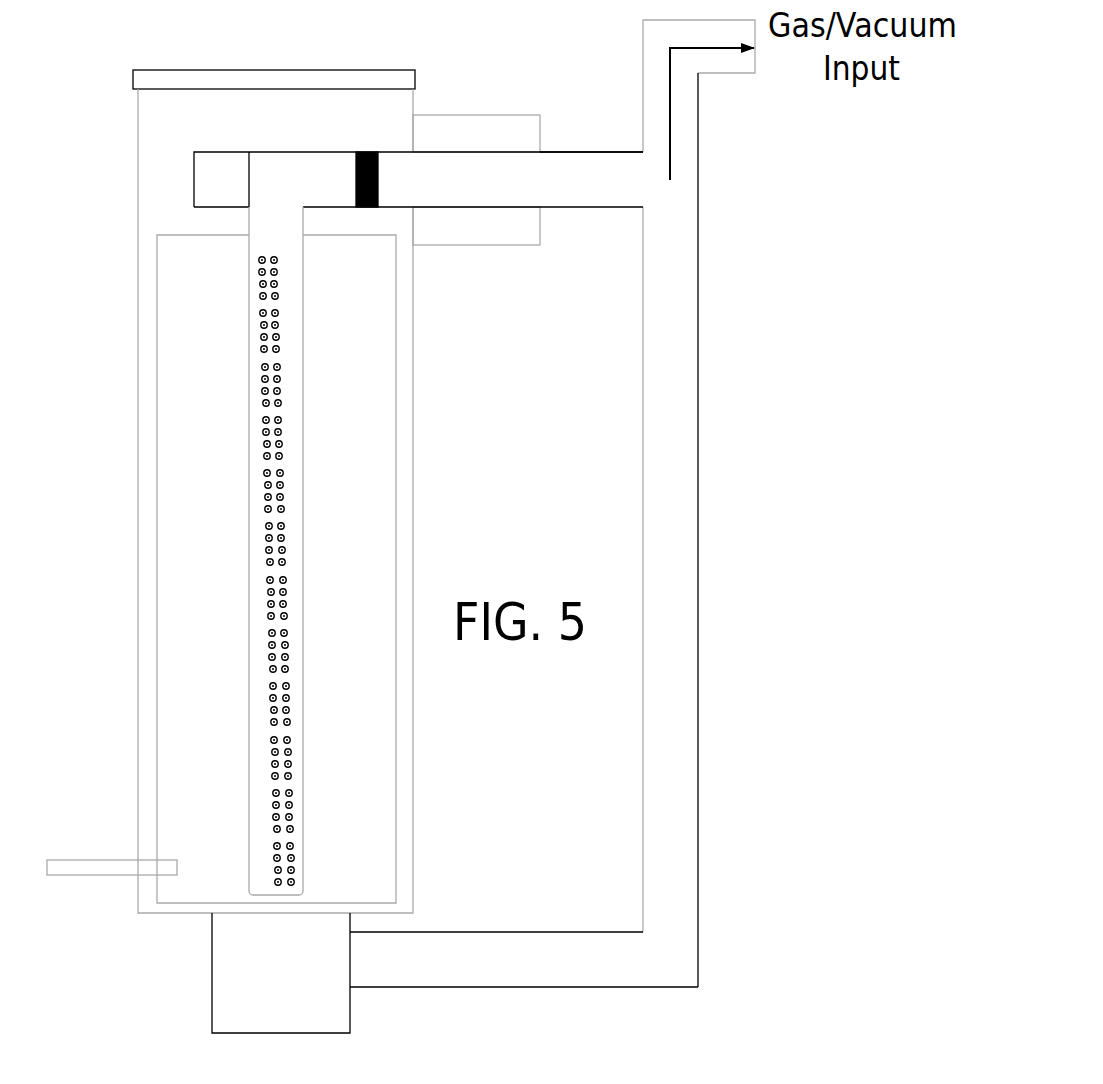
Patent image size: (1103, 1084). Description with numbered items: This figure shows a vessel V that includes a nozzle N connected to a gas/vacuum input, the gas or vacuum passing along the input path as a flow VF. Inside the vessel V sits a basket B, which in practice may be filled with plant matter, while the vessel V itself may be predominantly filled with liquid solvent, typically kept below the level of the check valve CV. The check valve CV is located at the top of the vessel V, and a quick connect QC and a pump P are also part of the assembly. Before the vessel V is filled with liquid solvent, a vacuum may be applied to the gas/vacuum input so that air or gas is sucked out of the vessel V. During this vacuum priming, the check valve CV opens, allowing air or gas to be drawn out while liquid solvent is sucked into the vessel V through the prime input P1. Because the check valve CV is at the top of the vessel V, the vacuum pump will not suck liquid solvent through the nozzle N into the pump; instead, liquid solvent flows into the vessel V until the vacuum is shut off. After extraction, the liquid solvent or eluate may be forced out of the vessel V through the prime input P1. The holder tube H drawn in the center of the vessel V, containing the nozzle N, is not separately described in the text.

The check valve CV is at (192, 152).
The flow VF is at (343, 177).
The quick connect QC is at (355, 150).
The vessel V is at (137, 362).
The basket B is at (155, 502).
The nozzle N is at (297, 383).
The holder tube H is at (288, 553).
The prime input P1 is at (106, 846).
The pump P is at (455, 973).